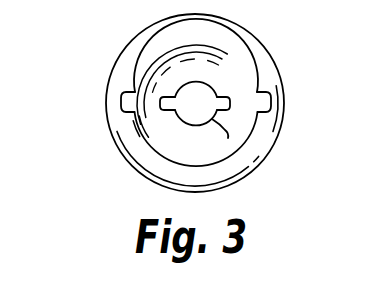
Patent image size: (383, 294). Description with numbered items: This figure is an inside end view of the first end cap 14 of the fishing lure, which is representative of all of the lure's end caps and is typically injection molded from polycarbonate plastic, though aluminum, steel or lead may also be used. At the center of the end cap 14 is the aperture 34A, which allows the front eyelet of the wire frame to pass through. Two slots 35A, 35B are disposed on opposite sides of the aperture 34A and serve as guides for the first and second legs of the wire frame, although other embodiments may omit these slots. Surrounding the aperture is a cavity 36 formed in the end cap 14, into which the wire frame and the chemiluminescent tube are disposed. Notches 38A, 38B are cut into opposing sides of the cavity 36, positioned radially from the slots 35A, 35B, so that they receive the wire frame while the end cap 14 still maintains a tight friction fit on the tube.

The first end cap 14 is at (287, 58).
The aperture 34A is at (228, 138).
The slot 35A is at (228, 97).
The slot 35B is at (167, 97).
The cavity 36 is at (160, 125).
The notch 38A is at (122, 98).
The notch 38B is at (270, 97).